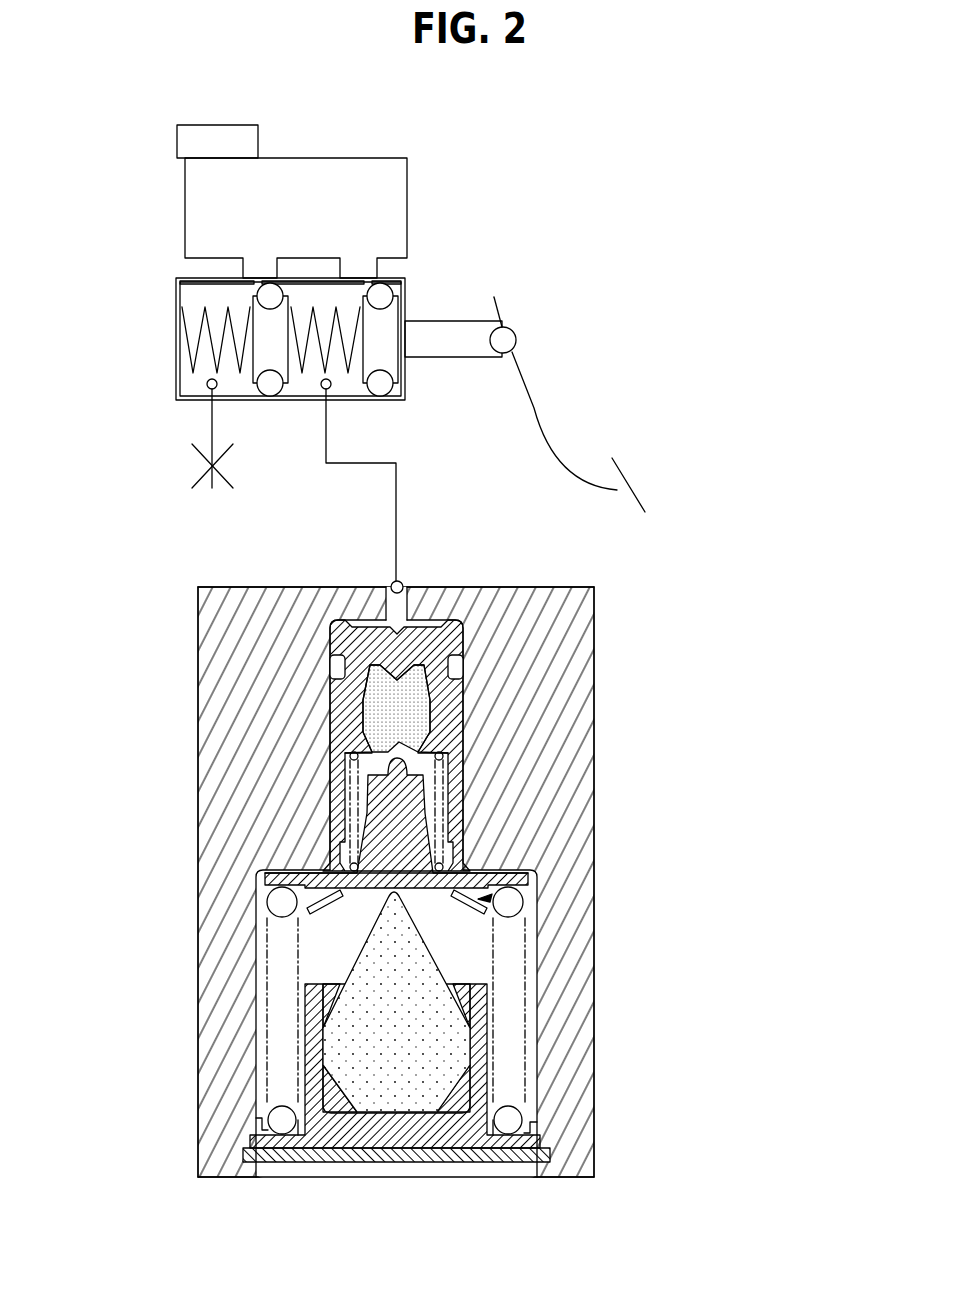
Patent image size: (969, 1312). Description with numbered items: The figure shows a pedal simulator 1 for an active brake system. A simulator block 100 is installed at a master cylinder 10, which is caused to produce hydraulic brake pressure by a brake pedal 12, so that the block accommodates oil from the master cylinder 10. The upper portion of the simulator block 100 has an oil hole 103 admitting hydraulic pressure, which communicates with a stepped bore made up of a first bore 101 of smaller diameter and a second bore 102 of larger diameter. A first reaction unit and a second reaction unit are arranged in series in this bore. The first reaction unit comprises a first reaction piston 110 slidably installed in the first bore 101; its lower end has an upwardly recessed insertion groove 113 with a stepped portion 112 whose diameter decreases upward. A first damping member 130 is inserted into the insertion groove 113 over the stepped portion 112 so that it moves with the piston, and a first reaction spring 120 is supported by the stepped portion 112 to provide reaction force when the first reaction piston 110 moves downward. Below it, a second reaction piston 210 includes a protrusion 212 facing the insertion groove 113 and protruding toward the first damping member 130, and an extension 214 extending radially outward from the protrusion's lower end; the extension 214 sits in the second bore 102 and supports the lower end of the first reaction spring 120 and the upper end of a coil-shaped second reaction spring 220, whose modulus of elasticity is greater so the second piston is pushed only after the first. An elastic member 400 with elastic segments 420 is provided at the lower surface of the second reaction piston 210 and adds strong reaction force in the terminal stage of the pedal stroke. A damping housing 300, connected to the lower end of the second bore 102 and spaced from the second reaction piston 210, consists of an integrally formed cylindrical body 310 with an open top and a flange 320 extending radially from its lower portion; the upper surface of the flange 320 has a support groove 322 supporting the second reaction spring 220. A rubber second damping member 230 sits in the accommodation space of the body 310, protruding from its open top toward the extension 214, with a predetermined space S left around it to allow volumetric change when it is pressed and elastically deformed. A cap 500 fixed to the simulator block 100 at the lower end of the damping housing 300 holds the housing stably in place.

The pedal simulator 1 is at (636, 586).
The master cylinder 10 is at (175, 285).
The brake pedal 12 is at (532, 402).
The simulator block 100 is at (594, 619).
The first bore 101 is at (330, 702).
The second bore 102 is at (258, 930).
The oil hole 103 is at (403, 602).
The first reaction piston 110 is at (452, 720).
The stepped portion 112 is at (447, 737).
The insertion groove 113 is at (430, 693).
The first reaction spring 120 is at (350, 797).
The first damping member 130 is at (343, 722).
The second reaction piston 210 is at (480, 823).
The protrusion 212 is at (408, 793).
The extension 214 is at (512, 862).
The second reaction spring 220 is at (508, 1107).
The second damping member 230 is at (450, 1027).
The damping housing 300 is at (318, 1066).
The body 310 is at (317, 1055).
The flange 320 is at (265, 1140).
The support groove 322 is at (537, 1127).
The elastic member 400 is at (503, 896).
The elastic segments 420 is at (485, 910).
The cap 500 is at (472, 1160).
The space S is at (338, 1107).